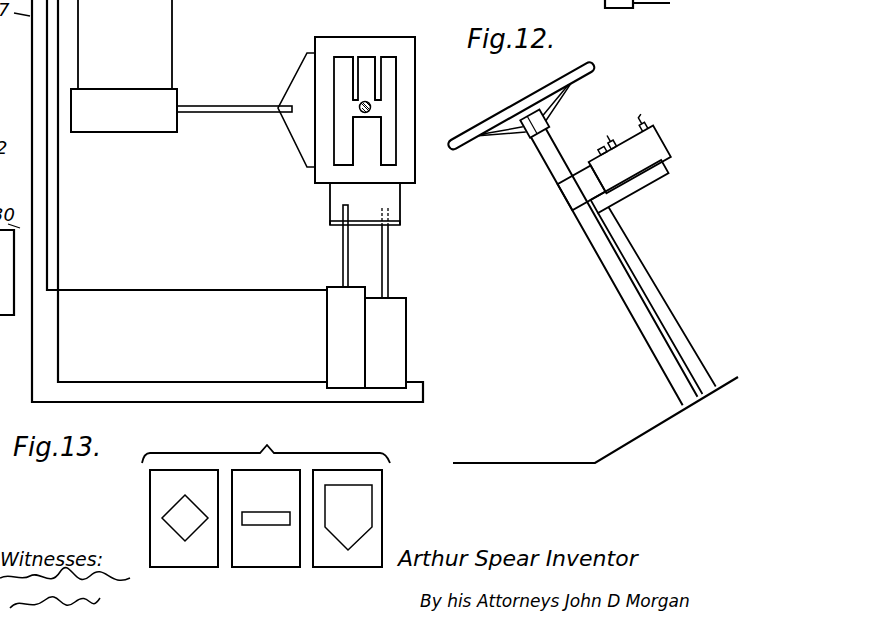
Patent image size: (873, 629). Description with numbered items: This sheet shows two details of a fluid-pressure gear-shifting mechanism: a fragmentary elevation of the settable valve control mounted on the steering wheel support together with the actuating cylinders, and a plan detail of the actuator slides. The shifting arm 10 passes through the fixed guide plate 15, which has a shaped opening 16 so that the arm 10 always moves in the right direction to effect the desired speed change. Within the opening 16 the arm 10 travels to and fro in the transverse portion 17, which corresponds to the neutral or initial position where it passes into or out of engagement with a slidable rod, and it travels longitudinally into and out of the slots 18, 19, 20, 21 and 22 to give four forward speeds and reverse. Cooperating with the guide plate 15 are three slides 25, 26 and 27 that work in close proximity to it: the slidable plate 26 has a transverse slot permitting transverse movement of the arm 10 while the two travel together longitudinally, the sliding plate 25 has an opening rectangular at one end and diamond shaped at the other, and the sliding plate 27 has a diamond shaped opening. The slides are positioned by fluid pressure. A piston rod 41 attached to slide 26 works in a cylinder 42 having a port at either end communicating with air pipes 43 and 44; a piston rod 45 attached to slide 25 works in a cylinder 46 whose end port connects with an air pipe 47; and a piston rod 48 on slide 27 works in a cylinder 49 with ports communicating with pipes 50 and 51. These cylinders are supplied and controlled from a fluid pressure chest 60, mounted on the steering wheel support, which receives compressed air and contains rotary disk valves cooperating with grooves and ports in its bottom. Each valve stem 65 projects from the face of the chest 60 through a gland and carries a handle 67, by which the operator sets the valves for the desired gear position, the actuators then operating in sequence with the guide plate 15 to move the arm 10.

In FIG. 12, the arm 10 is at (359, 107).
In FIG. 12, the fixed guide plate 15 is at (403, 98).
In FIG. 12, the opening 16 is at (340, 115).
In FIG. 12, the portion of slot 17 is at (382, 108).
In FIG. 12, the slot 18 is at (388, 152).
In FIG. 12, the slot 19 is at (346, 62).
In FIG. 12, the slot 20 is at (342, 155).
In FIG. 12, the slot 21 is at (368, 62).
In FIG. 12, the slot 22 is at (387, 65).
In FIG. 12, the sliding plate 25 is at (398, 225).
In FIG. 13, the sliding plate 25 is at (363, 562).
In FIG. 12, the slidable plate 26 is at (329, 208).
In FIG. 13, the slidable plate 26 is at (277, 562).
In FIG. 12, the sliding plate 27 is at (293, 73).
In FIG. 13, the sliding plate 27 is at (190, 563).
In FIG. 12, the piston rod 41 is at (343, 249).
In FIG. 12, the cylinder 42 is at (329, 323).
In FIG. 12, the air pipe 43 is at (327, 382).
In FIG. 12, the air pipe 44 is at (326, 290).
In FIG. 12, the piston rod 45 is at (388, 262).
In FIG. 12, the cylinder 46 is at (407, 347).
In FIG. 12, the air pipe 47 is at (408, 382).
In FIG. 12, the piston rod 48 is at (227, 114).
In FIG. 12, the cylinder 49 is at (138, 125).
In FIG. 12, the pipe 50 is at (171, 60).
In FIG. 12, the pipe 51 is at (80, 66).
In FIG. 12, the fluid pressure chest 60 is at (657, 137).
In FIG. 12, the valve stem 65 is at (602, 151).
In FIG. 12, the handle 67 is at (608, 137).